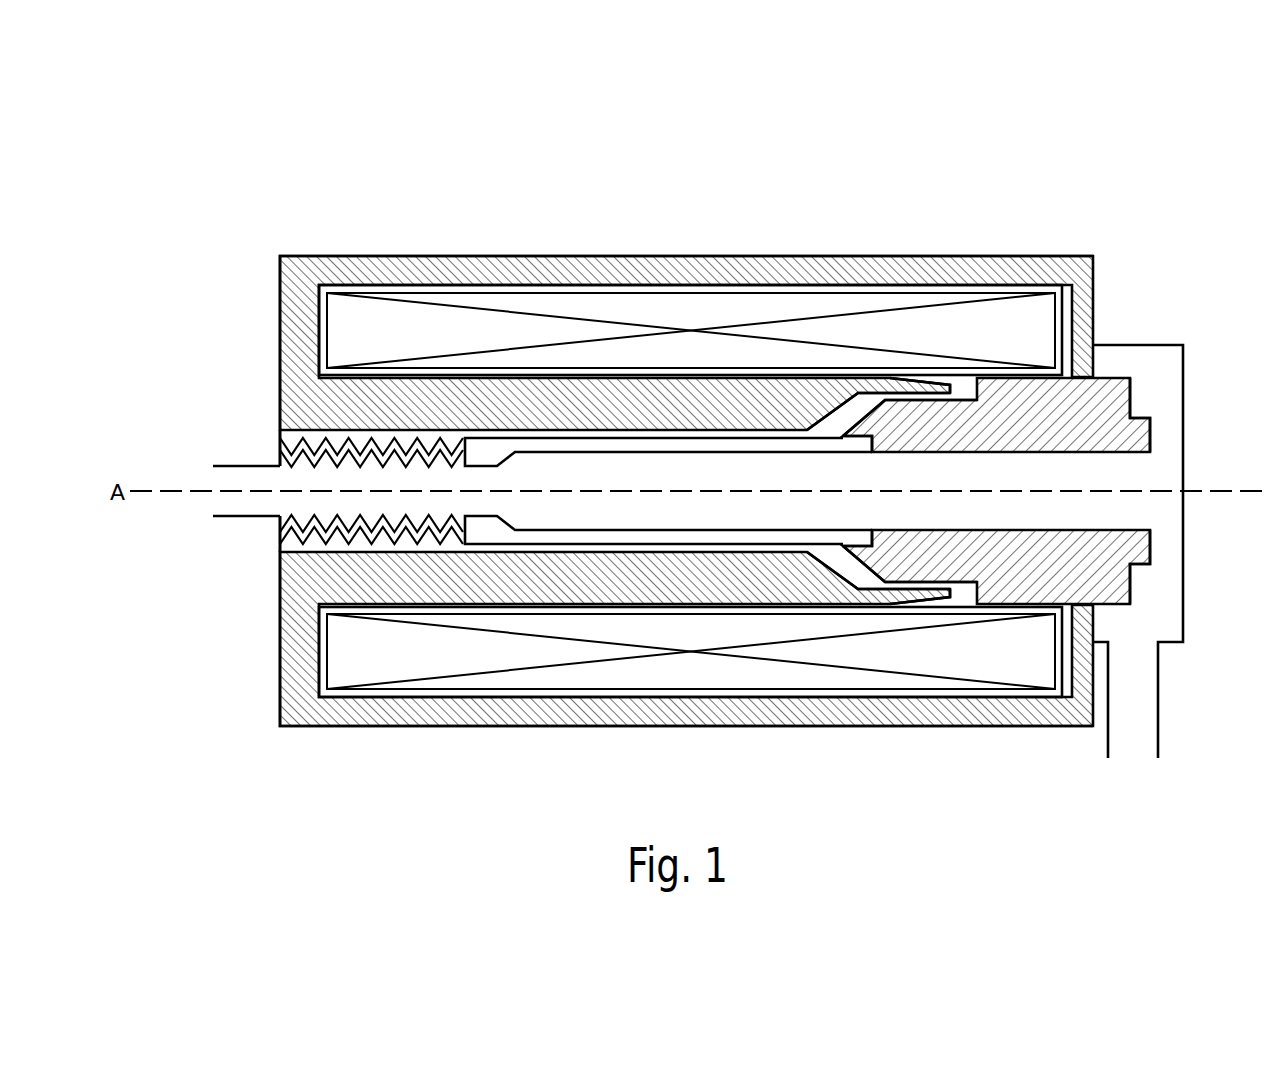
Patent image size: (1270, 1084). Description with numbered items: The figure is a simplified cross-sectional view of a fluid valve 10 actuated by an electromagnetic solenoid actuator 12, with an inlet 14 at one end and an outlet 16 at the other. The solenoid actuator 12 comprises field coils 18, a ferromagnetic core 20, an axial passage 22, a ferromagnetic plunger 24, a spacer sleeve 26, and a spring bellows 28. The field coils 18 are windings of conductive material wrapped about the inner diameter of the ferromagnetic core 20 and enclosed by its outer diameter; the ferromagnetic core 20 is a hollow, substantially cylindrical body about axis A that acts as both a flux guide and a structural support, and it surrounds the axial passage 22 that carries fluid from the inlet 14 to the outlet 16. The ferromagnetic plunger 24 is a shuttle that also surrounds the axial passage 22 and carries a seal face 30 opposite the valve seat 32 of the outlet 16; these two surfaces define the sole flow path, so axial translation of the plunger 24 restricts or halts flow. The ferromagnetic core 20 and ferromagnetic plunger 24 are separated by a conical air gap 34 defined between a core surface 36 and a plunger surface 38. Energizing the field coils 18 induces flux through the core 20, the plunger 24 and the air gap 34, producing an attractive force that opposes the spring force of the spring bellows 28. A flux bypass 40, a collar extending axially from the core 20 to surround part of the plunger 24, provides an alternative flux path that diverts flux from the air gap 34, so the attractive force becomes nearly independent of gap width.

The fluid valve 10 is at (1062, 208).
The solenoid actuator 12 is at (660, 246).
The inlet 14 is at (250, 465).
The outlet 16 is at (1174, 612).
The field coils 18 is at (712, 665).
The ferromagnetic core 20 is at (300, 583).
The axial passage 22 is at (355, 480).
The ferromagnetic plunger 24 is at (1100, 390).
The spacer sleeve 26 is at (620, 443).
The spring bellows 28 is at (385, 453).
The seal face 30 is at (1148, 436).
The valve seat 32 is at (1185, 450).
The air gap 34 is at (830, 400).
The core surface 36 is at (853, 418).
The plunger surface 38 is at (866, 440).
The flux bypass 40 is at (882, 385).